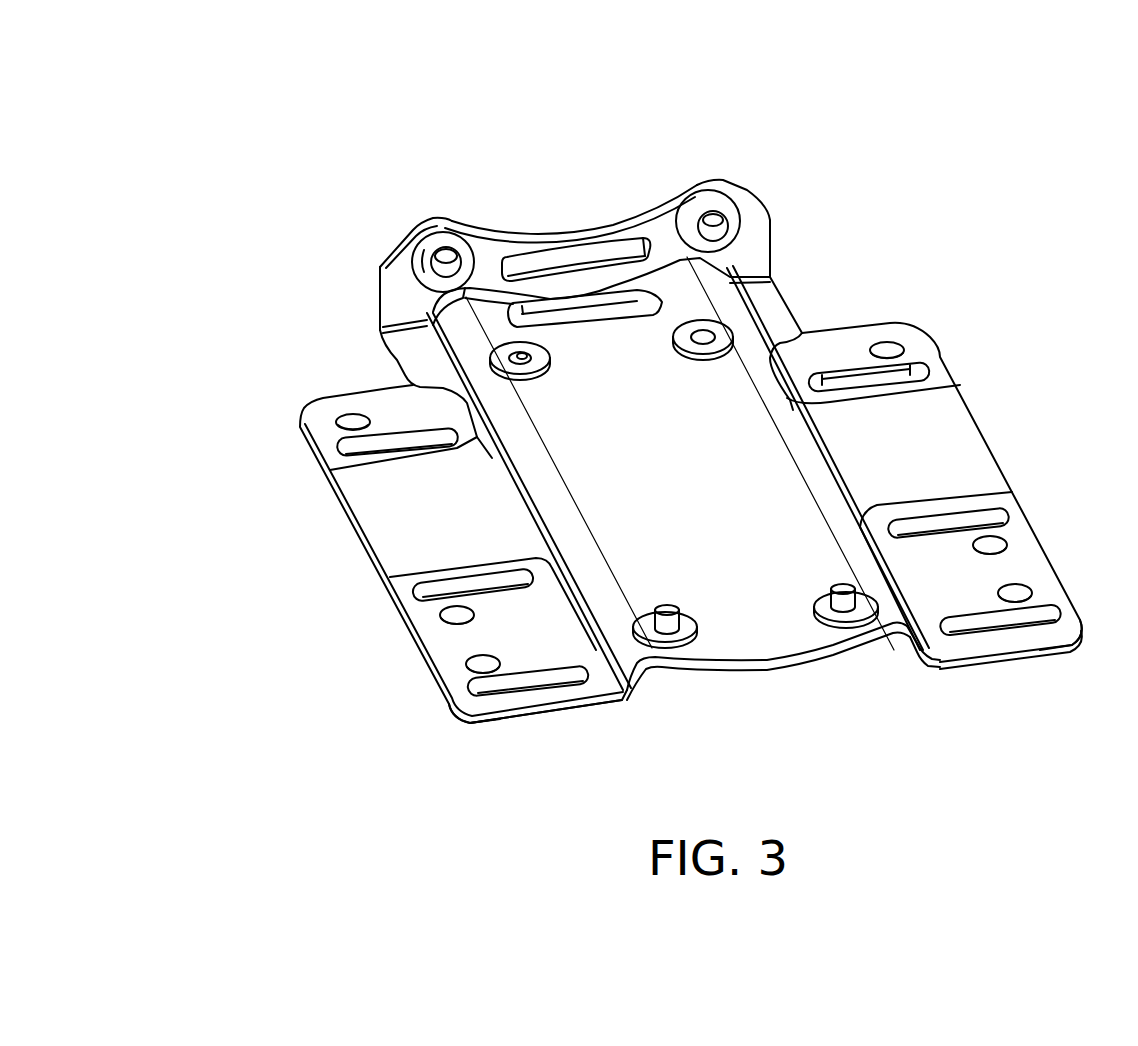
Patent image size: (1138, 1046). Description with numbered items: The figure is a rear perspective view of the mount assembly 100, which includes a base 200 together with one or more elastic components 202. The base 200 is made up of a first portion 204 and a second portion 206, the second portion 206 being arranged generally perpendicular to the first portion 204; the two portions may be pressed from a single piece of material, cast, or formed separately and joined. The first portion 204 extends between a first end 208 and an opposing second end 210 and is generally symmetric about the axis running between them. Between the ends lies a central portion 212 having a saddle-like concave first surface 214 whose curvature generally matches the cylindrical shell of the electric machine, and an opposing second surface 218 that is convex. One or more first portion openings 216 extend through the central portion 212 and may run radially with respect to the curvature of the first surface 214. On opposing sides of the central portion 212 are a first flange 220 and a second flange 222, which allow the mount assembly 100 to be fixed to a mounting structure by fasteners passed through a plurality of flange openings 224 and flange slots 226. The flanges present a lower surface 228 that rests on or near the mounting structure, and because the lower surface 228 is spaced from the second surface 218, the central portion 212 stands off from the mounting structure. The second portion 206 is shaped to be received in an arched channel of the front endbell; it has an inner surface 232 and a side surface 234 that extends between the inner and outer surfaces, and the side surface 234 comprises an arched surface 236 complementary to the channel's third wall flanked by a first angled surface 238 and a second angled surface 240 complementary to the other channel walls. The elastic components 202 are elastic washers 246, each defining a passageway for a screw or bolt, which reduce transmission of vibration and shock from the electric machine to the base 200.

The mount assembly 100 is at (700, 140).
The base 200 is at (589, 451).
The elastic components 202 is at (423, 260).
The first portion 204 is at (422, 554).
The second portion 206 is at (410, 290).
The first end 208 is at (432, 308).
The second end 210 is at (783, 702).
The central portion 212 is at (731, 474).
The first surface 214 is at (772, 527).
The first portion openings 216 is at (407, 383).
The second surface 218 is at (853, 640).
The first flange 220 is at (395, 514).
The second flange 222 is at (957, 457).
The flange openings 224 is at (483, 667).
The flange slots 226 is at (452, 712).
The lower surface 228 is at (524, 748).
The inner surface 232 is at (660, 218).
The side surface 234 is at (577, 230).
The arched surface 236 is at (523, 232).
The first angled surface 238 is at (395, 240).
The second angled surface 240 is at (743, 190).
The elastic washers 246 is at (505, 357).